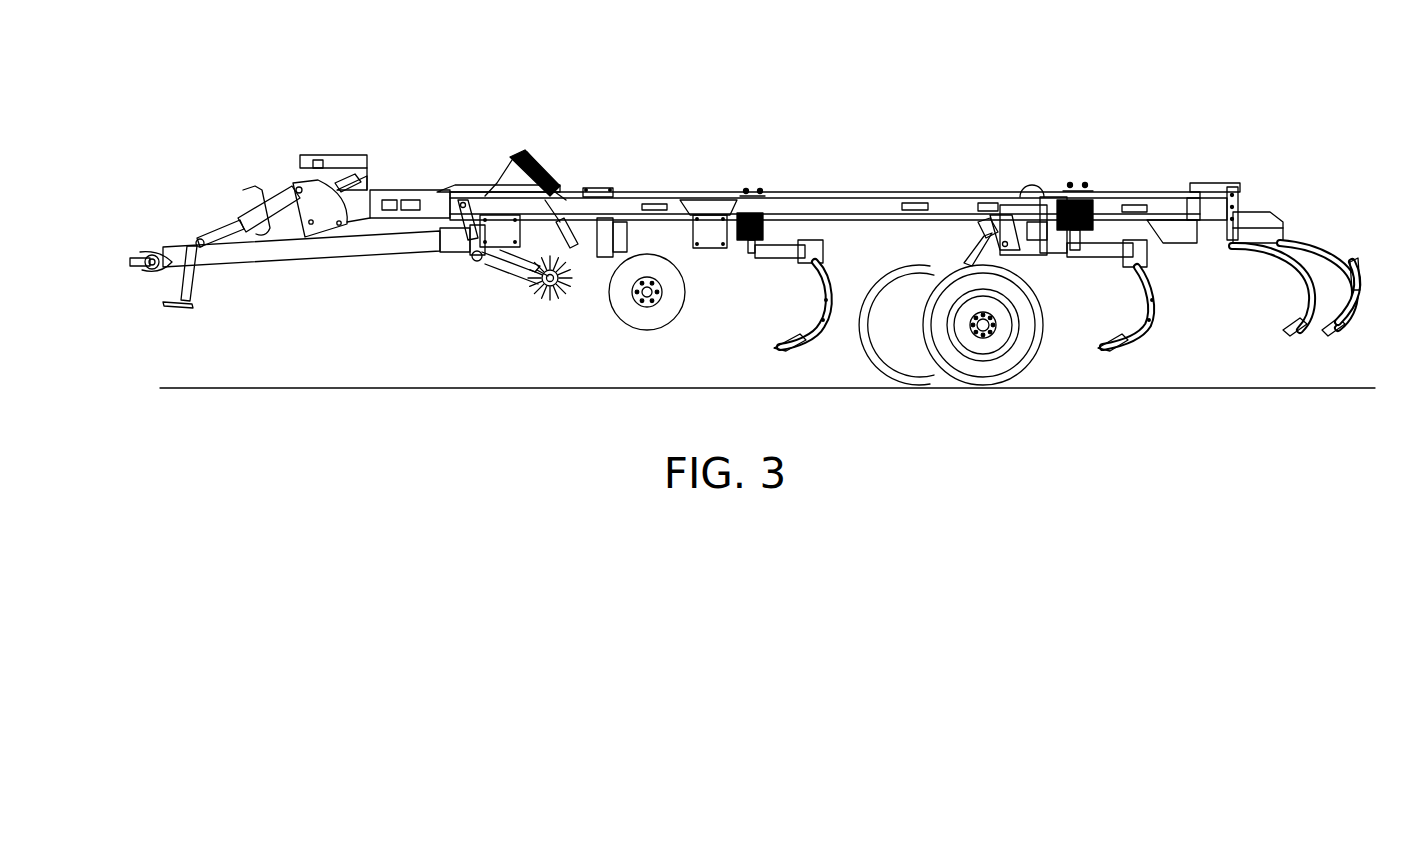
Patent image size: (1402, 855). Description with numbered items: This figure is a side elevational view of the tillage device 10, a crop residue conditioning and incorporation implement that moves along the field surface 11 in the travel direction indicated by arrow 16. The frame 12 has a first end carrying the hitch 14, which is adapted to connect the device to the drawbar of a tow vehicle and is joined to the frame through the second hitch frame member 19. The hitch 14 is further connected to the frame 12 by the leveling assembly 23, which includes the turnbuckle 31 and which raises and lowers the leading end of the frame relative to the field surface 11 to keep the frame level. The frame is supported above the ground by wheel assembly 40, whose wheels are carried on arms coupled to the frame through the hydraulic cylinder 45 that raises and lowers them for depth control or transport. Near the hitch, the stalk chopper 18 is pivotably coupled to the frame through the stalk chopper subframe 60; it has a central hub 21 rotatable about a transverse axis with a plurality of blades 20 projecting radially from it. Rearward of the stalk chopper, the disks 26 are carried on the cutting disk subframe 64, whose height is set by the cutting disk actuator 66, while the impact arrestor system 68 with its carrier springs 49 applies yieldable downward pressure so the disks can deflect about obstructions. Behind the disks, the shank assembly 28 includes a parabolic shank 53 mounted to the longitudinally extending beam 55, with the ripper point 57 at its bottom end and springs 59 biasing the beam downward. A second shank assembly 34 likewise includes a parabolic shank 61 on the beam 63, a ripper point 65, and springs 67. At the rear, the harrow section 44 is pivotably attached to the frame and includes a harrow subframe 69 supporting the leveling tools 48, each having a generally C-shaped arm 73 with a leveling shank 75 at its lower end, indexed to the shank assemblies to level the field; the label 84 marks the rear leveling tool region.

The tillage device 10 is at (850, 82).
The field surface 11 is at (460, 390).
The frame 12 is at (858, 190).
The hitch 14 is at (151, 251).
The arrow 16 is at (235, 343).
The stalk chopper 18 is at (537, 310).
The second hitch frame member 19 is at (228, 265).
The blades 20 is at (562, 290).
The central hub 21 is at (547, 300).
The leveling assembly 23 is at (293, 180).
The disks 26 is at (627, 325).
The shank assembly 28 is at (798, 263).
The turnbuckle 31 is at (238, 212).
The shank assembly 34 is at (1157, 244).
The wheel assembly 40 is at (1032, 372).
The harrow section 44 is at (1268, 208).
The hydraulic cylinder 45 is at (992, 228).
The leveling tool 48 is at (1344, 318).
The carrier springs 49 is at (519, 150).
The parabolic shank 53 is at (825, 318).
The beam 55 is at (781, 246).
The ripper point 57 is at (778, 350).
The springs 59 is at (735, 227).
The stalk chopper subframe 60 is at (472, 262).
The parabolic shank 61 is at (1155, 320).
The beam 63 is at (1093, 251).
The cutting disk subframe 64 is at (1298, 320).
The ripper point 65 is at (1113, 345).
The cutting disk actuator 66 is at (554, 224).
The springs 67 is at (1098, 185).
The impact arrestor system 68 is at (546, 158).
The harrow subframe 69 is at (1246, 206).
The C-shaped arm 73 is at (1306, 240).
The leveling shank 75 is at (1293, 327).
The closing assembly 84 is at (1314, 273).